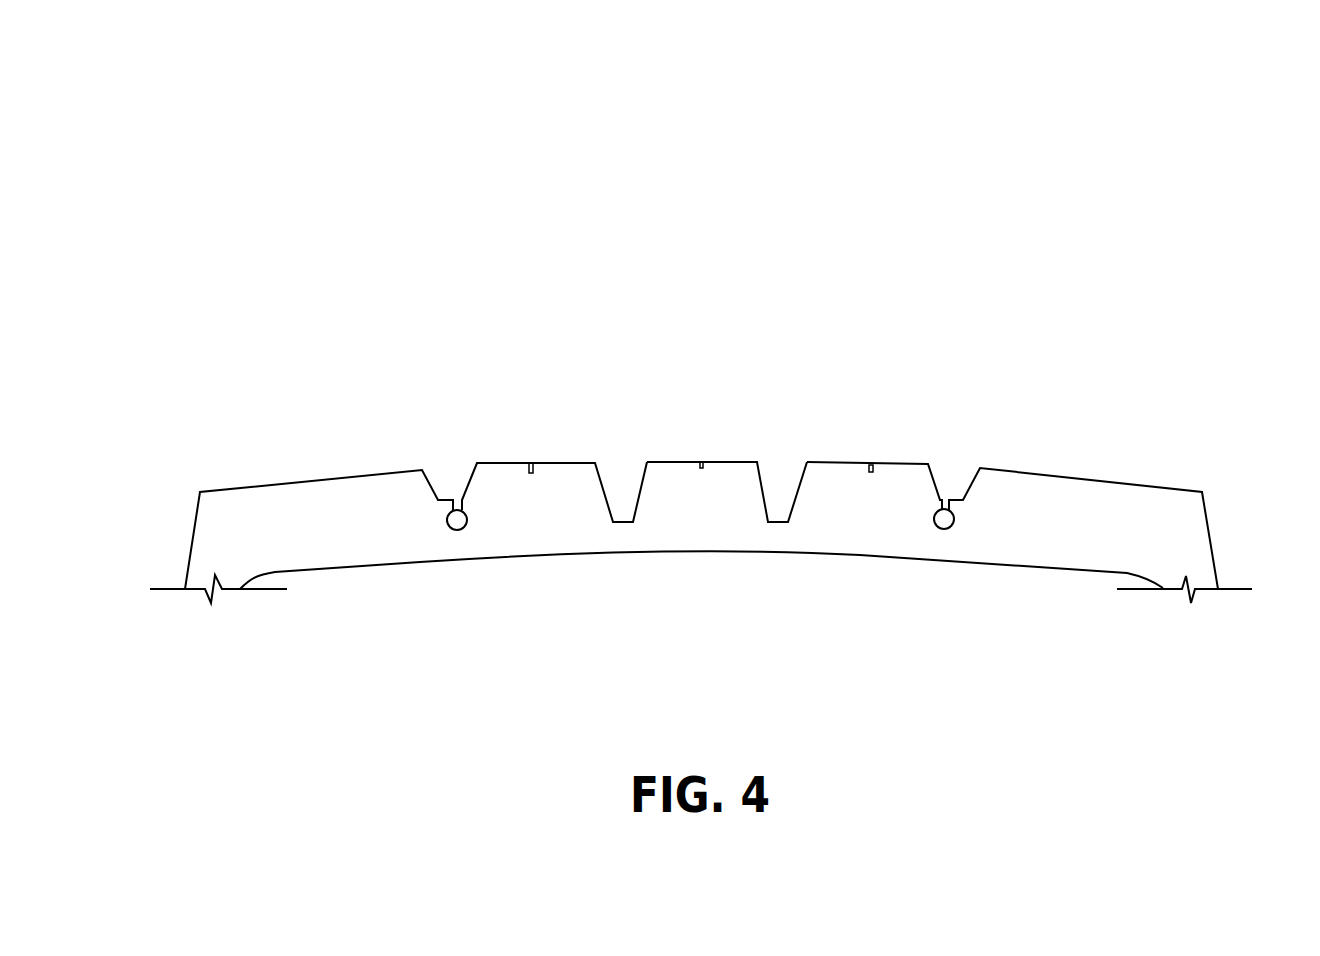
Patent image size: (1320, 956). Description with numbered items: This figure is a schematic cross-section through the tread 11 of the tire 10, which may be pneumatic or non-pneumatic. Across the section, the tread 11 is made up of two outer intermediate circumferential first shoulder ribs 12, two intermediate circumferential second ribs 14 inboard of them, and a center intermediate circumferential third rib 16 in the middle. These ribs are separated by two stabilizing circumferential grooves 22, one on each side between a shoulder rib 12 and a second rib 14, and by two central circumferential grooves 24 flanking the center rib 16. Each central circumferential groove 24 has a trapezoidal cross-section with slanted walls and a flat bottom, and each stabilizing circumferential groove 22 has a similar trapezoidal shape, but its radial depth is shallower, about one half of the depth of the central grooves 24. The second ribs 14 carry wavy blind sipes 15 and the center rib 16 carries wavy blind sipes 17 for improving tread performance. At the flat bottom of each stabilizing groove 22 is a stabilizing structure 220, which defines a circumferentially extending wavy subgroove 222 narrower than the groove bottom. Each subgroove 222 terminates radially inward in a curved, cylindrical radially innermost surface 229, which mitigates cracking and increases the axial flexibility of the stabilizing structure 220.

The tire 10 is at (275, 158).
The tread 11 is at (263, 248).
The intermediate circumferential first shoulder rib 12 is at (327, 503).
The intermediate circumferential second rib 14 is at (545, 508).
The wavy blind sipe 15 is at (532, 470).
The center intermediate circumferential third rib 16 is at (713, 510).
The wavy blind sipe 17 is at (701, 463).
The stabilizing circumferential groove 22 is at (446, 493).
The central circumferential groove 24 is at (619, 503).
The stabilizing structure 220 is at (447, 535).
The wavy subgroove 222 is at (477, 513).
The curved cylindrical radially innermost surface 229 is at (442, 518).